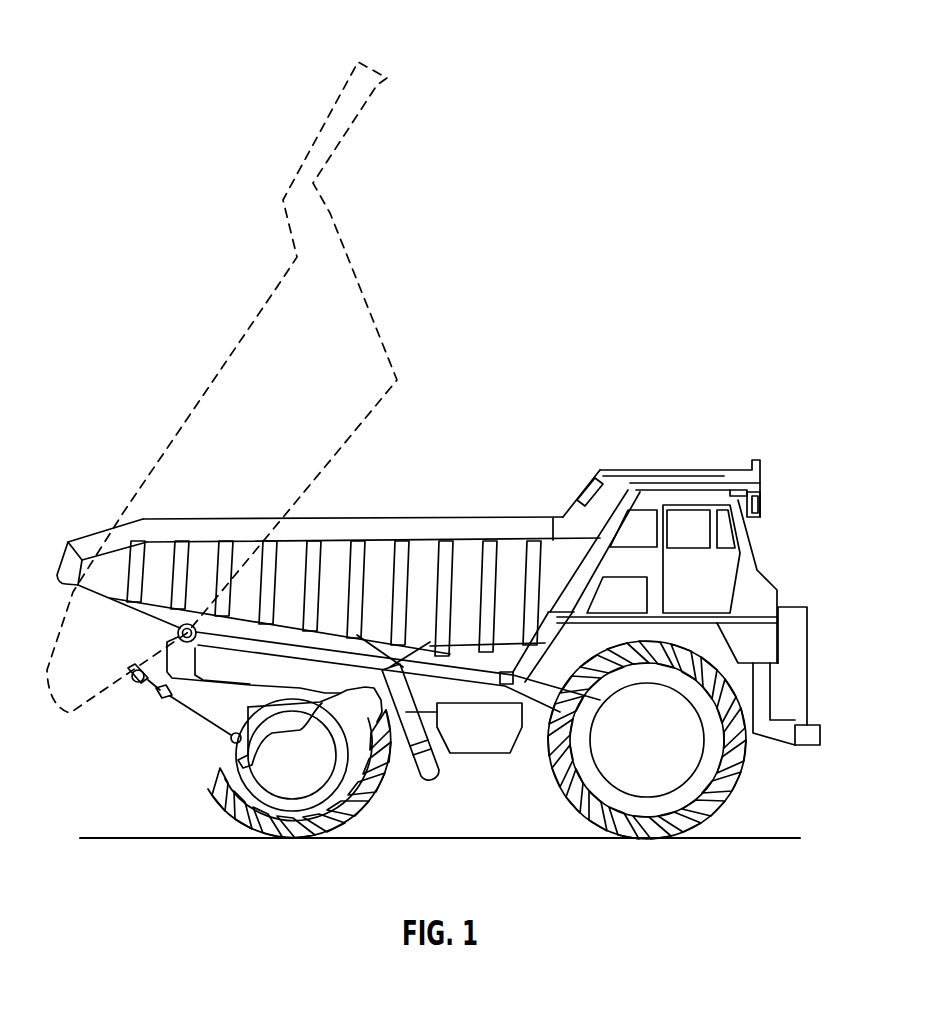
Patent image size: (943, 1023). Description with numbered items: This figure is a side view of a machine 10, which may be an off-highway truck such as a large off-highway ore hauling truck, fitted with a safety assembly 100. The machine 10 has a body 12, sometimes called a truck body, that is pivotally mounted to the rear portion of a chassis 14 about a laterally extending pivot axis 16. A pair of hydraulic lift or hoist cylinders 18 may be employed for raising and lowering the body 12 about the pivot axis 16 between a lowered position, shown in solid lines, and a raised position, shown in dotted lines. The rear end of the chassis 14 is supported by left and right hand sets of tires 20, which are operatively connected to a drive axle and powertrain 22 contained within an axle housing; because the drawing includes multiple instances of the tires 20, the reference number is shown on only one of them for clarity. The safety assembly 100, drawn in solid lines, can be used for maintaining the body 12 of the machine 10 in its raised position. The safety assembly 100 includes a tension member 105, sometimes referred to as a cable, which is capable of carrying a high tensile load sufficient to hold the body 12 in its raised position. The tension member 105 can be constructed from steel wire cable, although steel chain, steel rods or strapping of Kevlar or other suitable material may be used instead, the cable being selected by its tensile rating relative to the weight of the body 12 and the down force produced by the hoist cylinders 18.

The machine 10 is at (757, 540).
The body 12 is at (270, 297).
The chassis 14 is at (533, 730).
The pivot axis 16 is at (176, 635).
The hoist cylinders 18 is at (417, 733).
The tires 20 is at (292, 838).
The drive axle and powertrain 22 is at (270, 700).
The safety assembly 100 is at (174, 726).
The tension member 105 is at (190, 712).